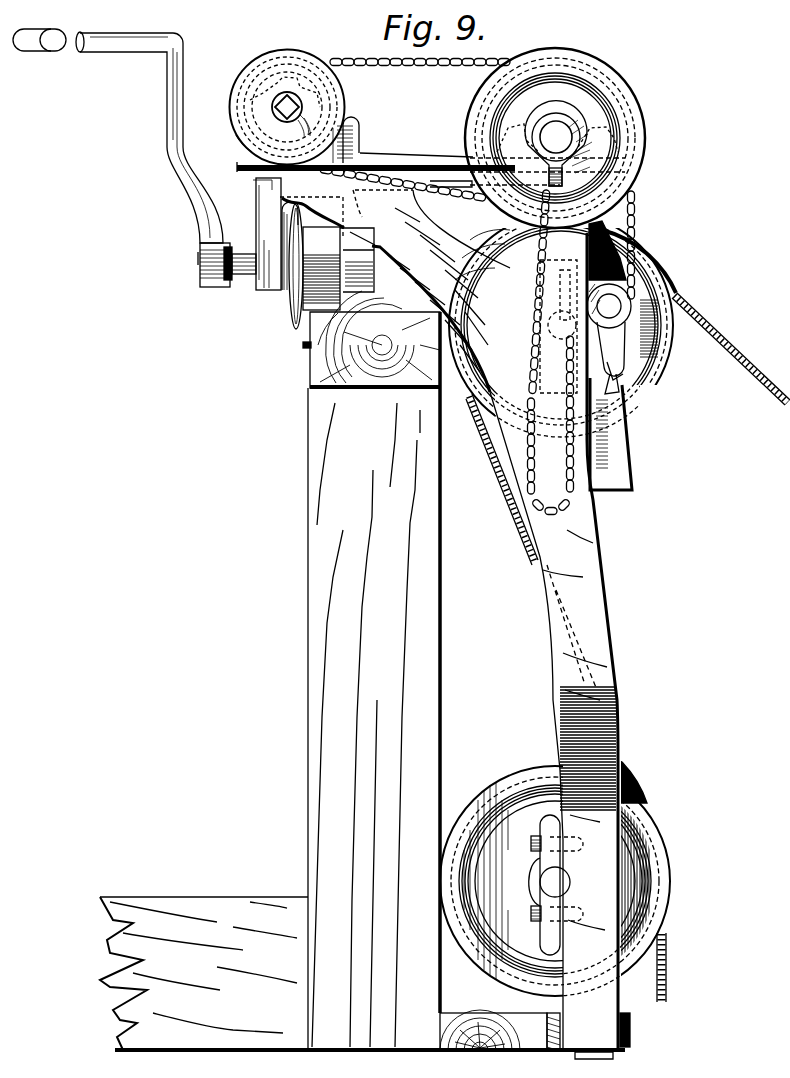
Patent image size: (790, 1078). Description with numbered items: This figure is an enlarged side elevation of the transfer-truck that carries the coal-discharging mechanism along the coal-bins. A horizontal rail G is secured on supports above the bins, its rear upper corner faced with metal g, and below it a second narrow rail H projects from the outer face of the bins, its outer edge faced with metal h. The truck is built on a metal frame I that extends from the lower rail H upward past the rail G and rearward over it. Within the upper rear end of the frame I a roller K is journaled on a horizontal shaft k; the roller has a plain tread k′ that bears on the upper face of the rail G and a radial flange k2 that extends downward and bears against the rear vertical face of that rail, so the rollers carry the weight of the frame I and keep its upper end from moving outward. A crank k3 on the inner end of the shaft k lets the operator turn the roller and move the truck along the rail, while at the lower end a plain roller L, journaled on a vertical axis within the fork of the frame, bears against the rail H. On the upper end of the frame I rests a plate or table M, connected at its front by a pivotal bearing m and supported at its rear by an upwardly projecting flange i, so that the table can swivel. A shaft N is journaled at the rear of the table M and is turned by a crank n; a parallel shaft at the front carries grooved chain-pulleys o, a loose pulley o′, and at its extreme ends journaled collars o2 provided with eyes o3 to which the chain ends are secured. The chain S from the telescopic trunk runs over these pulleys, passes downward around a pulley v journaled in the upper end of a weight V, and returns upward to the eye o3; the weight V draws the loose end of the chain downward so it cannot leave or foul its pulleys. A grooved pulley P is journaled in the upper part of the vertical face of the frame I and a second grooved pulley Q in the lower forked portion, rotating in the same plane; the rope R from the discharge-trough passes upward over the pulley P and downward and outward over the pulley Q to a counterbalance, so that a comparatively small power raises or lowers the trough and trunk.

The crank k3 is at (173, 166).
The horizontal shaft k is at (241, 278).
The flange i is at (262, 180).
The roller K is at (289, 297).
The radial flange k2 is at (290, 320).
The plain tread k′ is at (338, 268).
The metal face g is at (302, 346).
The rail G is at (311, 373).
The shaft N is at (306, 112).
The pivotal bearing m is at (268, 92).
The crank n is at (240, 138).
The plate M is at (409, 163).
The metal frame I is at (453, 624).
The loose pulley o′ is at (646, 140).
The grooved chain-pulley o is at (554, 125).
The collar o2 is at (537, 152).
The eye o3 is at (548, 179).
The chain S is at (437, 67).
The grooved pulley P is at (661, 372).
The pulley v is at (647, 299).
The weight V is at (615, 445).
The rope R is at (726, 367).
The grooved pulley Q is at (664, 861).
The rail H is at (470, 1019).
The metal facing h is at (547, 1020).
The plain roller L is at (630, 1033).